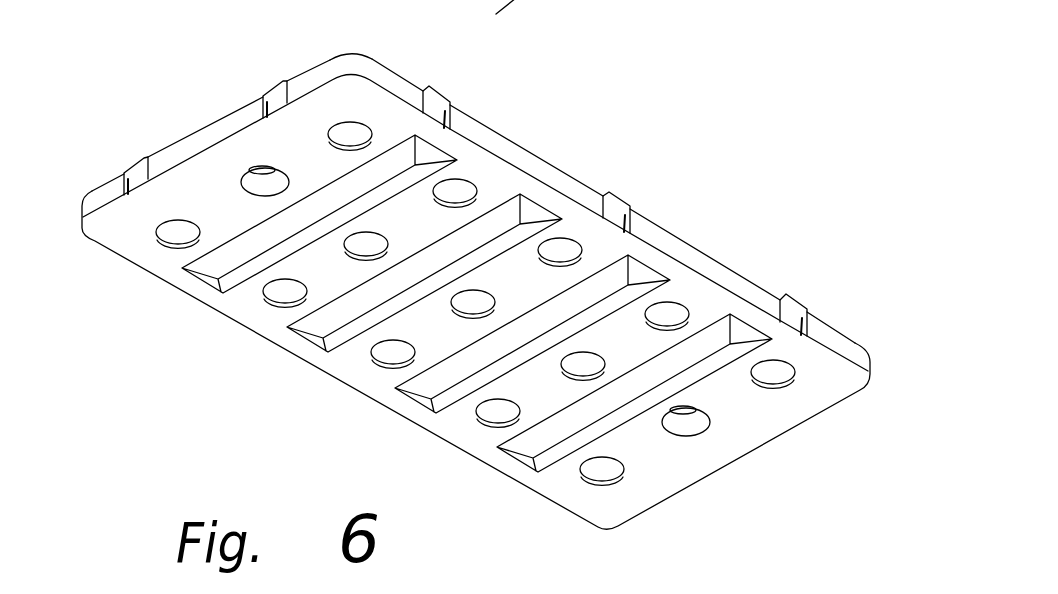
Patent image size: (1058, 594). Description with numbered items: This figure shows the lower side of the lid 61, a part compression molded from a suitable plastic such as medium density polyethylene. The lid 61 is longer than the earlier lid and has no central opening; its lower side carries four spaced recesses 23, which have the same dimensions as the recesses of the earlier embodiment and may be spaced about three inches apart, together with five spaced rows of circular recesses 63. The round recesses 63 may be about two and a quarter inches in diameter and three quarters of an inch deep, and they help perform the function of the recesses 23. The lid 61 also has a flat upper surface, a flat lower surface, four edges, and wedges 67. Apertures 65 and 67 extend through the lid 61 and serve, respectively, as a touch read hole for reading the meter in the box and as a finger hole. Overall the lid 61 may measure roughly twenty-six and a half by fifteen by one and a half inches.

The lid 61 is at (598, 160).
The circular recesses 63 is at (252, 160).
The aperture 65 is at (348, 140).
The recesses 23 is at (428, 150).
The aperture 67 is at (797, 298).